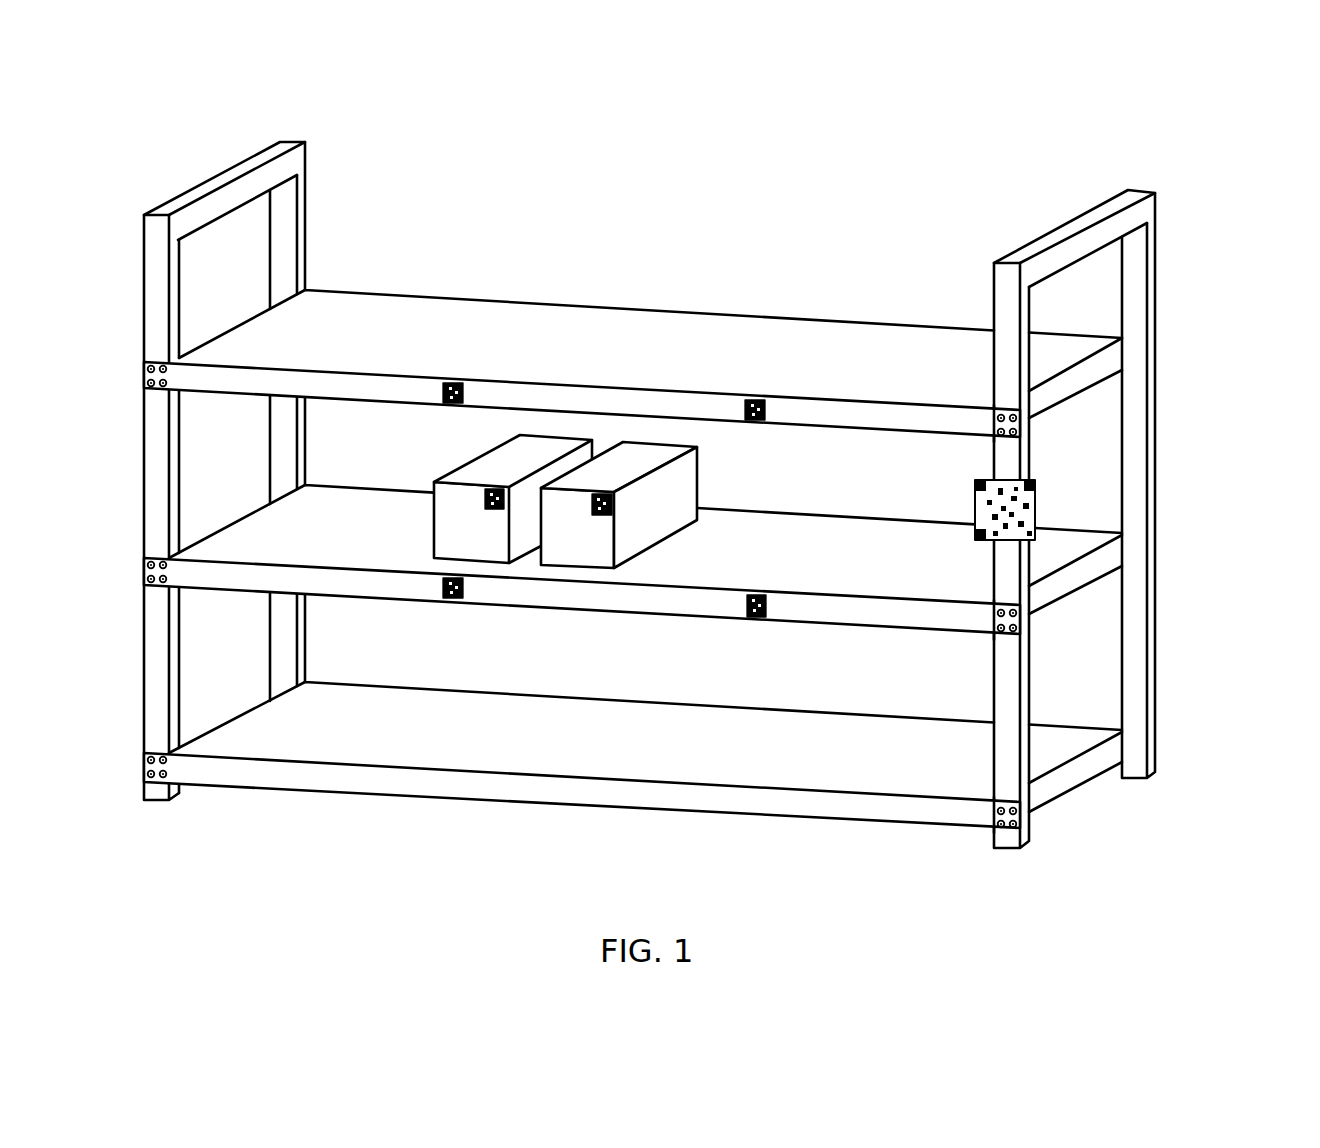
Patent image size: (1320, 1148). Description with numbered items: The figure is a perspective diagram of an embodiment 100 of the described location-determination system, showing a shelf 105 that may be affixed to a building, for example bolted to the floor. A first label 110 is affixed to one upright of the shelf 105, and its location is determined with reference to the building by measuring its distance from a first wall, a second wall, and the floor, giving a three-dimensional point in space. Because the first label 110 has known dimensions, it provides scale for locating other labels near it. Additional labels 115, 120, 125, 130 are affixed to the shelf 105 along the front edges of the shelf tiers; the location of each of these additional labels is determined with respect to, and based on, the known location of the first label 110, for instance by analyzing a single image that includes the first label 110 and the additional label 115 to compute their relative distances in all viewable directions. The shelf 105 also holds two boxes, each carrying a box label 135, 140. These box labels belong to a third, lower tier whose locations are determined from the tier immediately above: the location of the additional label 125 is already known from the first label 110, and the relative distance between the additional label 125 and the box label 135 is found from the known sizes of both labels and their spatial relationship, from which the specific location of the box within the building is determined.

The inventory storage system 100 is at (705, 444).
The shelf 105 is at (1155, 672).
The first label 110 is at (1035, 502).
The additional label 115 is at (448, 405).
The additional label 120 is at (755, 422).
The additional label 125 is at (448, 600).
The additional label 130 is at (752, 618).
The box label 135 is at (496, 510).
The box label 140 is at (602, 516).